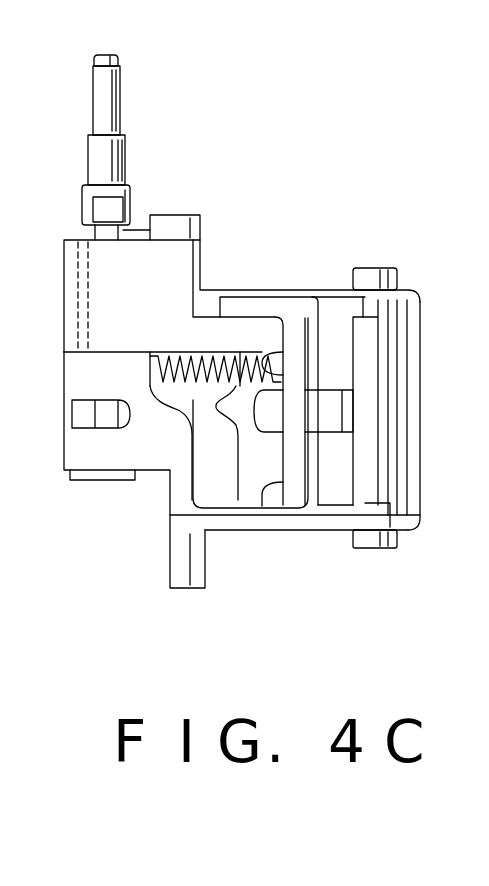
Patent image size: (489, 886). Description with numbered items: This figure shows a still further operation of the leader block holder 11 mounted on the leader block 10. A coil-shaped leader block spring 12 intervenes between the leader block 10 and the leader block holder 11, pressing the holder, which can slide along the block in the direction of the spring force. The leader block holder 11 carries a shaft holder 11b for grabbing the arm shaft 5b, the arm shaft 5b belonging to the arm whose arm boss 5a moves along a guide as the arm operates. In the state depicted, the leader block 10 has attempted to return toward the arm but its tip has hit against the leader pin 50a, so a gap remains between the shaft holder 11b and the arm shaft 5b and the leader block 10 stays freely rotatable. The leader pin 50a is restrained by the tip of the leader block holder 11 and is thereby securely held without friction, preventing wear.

The arm boss 5a is at (75, 212).
The arm shaft 5b is at (104, 100).
The leader block 10 is at (413, 470).
The leader block holder 11 is at (178, 268).
The shaft holder 11b is at (62, 295).
The leader block spring 12 is at (213, 426).
The leader pin 50a is at (392, 269).